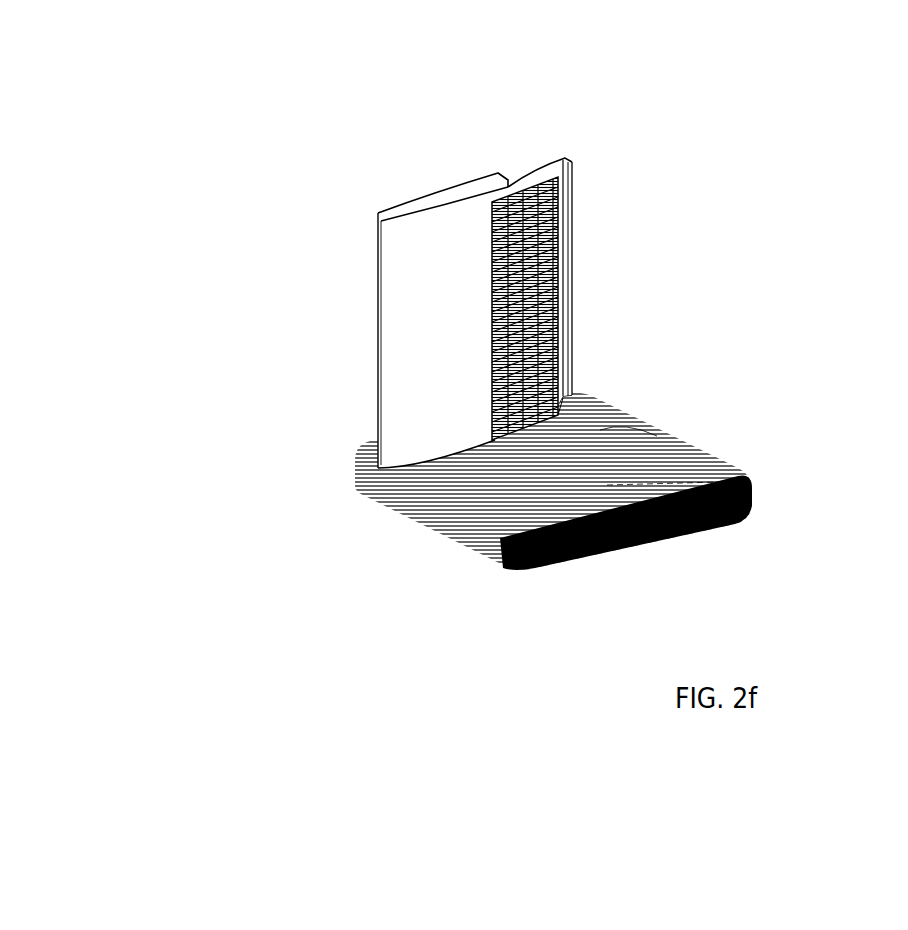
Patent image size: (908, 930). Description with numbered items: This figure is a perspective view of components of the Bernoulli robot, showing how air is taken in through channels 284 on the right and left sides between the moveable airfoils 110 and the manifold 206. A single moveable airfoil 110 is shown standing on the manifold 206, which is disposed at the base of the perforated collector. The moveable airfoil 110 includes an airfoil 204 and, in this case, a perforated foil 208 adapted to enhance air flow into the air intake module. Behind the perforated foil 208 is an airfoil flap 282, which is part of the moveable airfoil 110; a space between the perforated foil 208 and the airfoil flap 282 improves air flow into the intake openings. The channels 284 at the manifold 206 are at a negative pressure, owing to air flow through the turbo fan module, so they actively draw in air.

The moveable airfoil 110 is at (358, 239).
The airfoil 204 is at (428, 227).
The manifold 206 is at (437, 510).
The perforated foil 208 is at (557, 322).
The airfoil flap 282 is at (550, 170).
The channel 284 is at (577, 392).